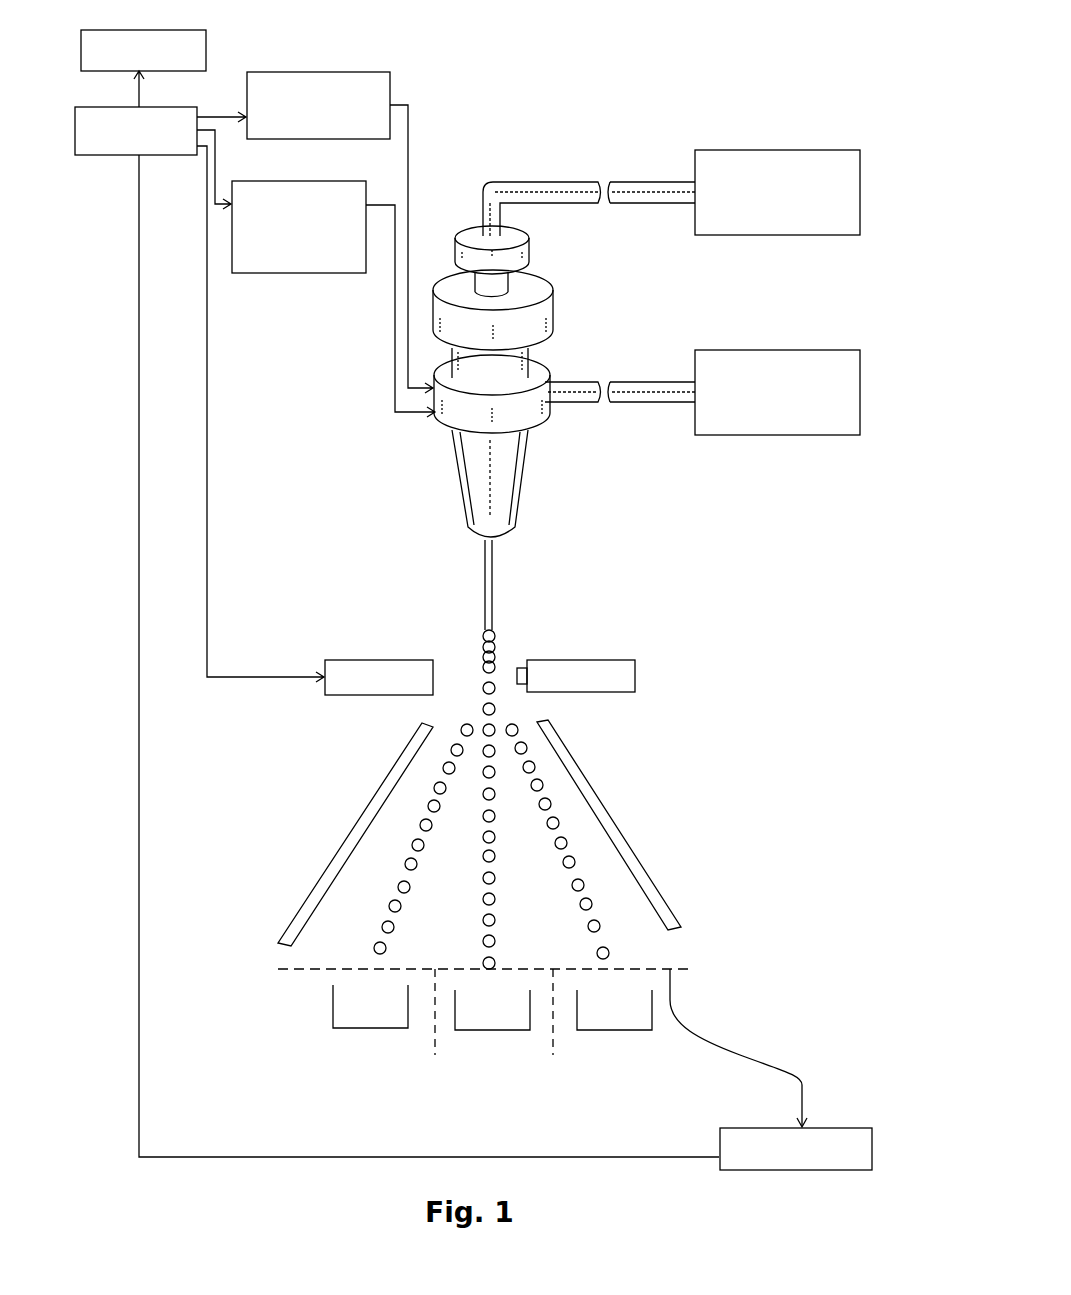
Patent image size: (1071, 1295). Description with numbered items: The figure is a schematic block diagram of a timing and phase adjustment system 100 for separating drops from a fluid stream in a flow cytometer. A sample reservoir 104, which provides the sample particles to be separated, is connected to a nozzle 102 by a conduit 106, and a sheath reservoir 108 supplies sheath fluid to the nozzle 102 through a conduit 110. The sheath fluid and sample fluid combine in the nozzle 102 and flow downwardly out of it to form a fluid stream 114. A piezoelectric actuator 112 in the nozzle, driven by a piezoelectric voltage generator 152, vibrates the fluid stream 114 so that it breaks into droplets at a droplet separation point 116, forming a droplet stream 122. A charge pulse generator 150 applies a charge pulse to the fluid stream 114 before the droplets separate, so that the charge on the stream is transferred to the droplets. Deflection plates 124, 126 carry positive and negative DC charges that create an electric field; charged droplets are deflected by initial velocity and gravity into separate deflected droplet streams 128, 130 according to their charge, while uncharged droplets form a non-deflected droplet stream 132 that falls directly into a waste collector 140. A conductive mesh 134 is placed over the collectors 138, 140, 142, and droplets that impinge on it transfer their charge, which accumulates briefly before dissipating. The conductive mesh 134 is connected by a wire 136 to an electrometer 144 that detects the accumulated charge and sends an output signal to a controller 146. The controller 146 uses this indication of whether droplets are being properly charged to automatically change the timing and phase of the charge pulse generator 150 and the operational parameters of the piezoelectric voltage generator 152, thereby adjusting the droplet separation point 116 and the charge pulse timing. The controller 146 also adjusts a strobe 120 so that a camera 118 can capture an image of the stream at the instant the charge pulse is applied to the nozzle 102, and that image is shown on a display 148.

The timing and phase adjustment system 100 is at (653, 88).
The nozzle 102 is at (614, 311).
The sample reservoir 104 is at (753, 155).
The conduit 106 is at (555, 180).
The sheath reservoir 108 is at (753, 352).
The conduit 110 is at (630, 380).
The piezoelectric actuator 112 is at (543, 418).
The fluid stream 114 is at (495, 573).
The droplet separation point 116 is at (498, 662).
The camera 118 is at (637, 676).
The strobe 120 is at (375, 660).
The droplet stream 122 is at (506, 700).
The deflection plate 124 is at (378, 790).
The deflection plate 126 is at (607, 808).
The deflected droplet stream 128 is at (383, 903).
The deflected droplet stream 130 is at (618, 934).
The non-deflected droplet stream 132 is at (504, 852).
The conductive mesh 134 is at (332, 978).
The wire 136 is at (802, 1085).
The collector 138 is at (340, 1030).
The waste collector 140 is at (475, 1030).
The collector 142 is at (618, 1030).
The electrometer 144 is at (778, 1170).
The controller 146 is at (92, 157).
The display 148 is at (210, 35).
The charge pulse generator 150 is at (367, 72).
The piezoelectric voltage generator 152 is at (334, 181).